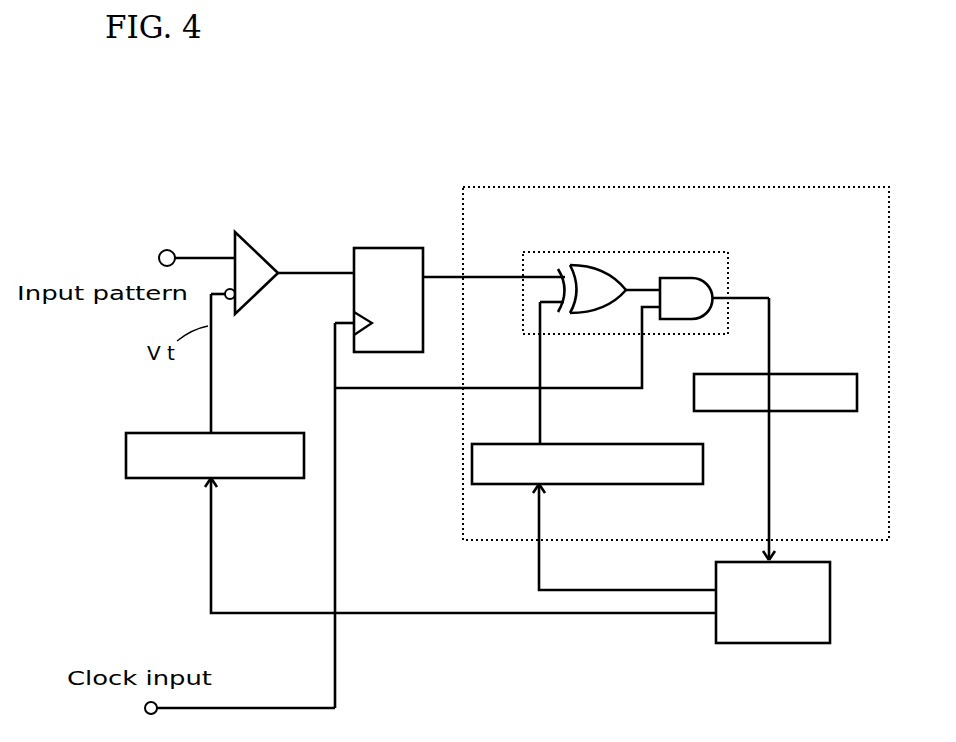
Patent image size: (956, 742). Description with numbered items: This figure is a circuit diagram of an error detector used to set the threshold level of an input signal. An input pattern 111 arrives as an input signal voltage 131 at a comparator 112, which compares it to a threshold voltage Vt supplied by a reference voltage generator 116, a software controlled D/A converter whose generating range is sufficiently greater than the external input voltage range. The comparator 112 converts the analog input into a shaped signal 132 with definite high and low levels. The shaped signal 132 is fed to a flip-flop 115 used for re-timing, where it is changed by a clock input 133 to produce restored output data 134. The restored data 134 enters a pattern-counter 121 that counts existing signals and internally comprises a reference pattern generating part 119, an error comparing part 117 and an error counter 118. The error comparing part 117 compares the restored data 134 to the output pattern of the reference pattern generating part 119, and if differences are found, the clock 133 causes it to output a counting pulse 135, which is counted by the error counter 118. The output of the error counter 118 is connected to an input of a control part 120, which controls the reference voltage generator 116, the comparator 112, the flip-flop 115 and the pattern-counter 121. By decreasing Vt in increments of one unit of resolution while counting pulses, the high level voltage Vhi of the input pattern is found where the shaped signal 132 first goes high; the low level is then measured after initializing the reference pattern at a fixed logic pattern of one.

The input pattern 111 is at (126, 255).
The comparator 112 is at (258, 246).
The flip-flop 115 is at (385, 248).
The reference voltage generator 116 is at (238, 432).
The error comparing part 117 is at (610, 252).
The error counter 118 is at (800, 372).
The reference pattern generating part 119 is at (523, 476).
The control part 120 is at (758, 643).
The pattern-counter 121 is at (598, 187).
The input signal voltage 131 is at (215, 250).
The shaped signal 132 is at (323, 254).
The clock input 133 is at (355, 673).
The restored output data 134 is at (505, 272).
The counting pulse 135 is at (779, 284).